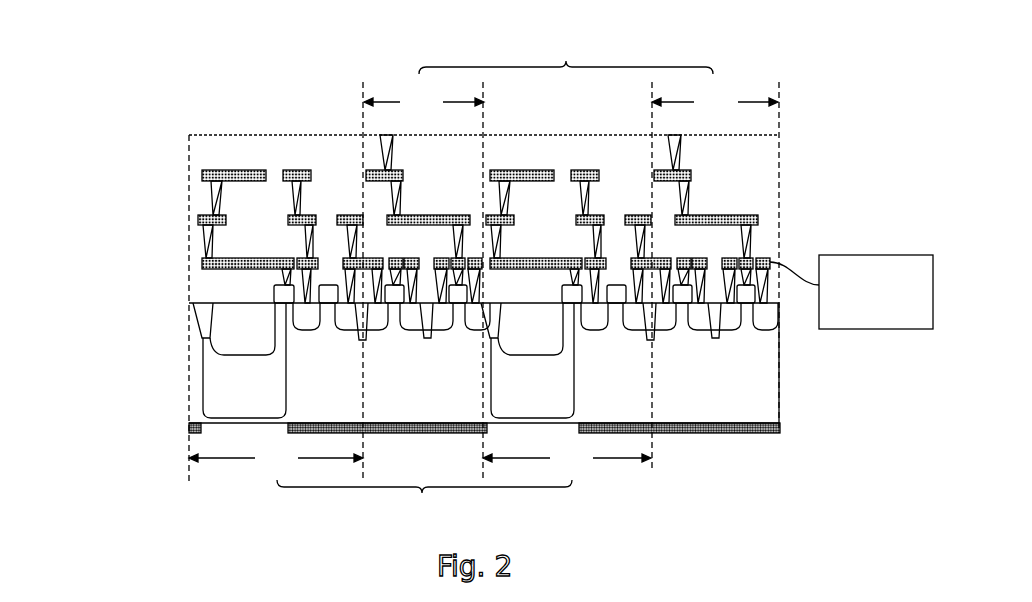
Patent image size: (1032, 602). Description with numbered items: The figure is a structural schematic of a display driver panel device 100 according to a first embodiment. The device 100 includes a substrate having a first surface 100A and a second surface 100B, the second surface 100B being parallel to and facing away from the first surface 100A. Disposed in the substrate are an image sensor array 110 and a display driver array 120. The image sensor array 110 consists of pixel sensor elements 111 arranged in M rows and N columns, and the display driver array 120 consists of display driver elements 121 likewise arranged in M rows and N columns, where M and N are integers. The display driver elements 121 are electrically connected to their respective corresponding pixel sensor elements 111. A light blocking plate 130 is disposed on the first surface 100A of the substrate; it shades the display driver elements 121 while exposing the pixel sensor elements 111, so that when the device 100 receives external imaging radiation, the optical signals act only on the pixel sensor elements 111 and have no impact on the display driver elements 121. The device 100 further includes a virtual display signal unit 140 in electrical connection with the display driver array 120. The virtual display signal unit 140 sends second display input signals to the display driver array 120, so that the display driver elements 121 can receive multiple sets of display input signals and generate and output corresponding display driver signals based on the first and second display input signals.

The display driver panel device 100 is at (56, 50).
The first surface 100A is at (218, 434).
The second surface 100B is at (212, 132).
The image sensor array 110 is at (424, 503).
The pixel sensor elements 111 is at (420, 460).
The display driver array 120 is at (566, 54).
The display driver elements 121 is at (571, 103).
The light blocking plate 130 is at (690, 433).
The virtual display signal unit 140 is at (877, 255).